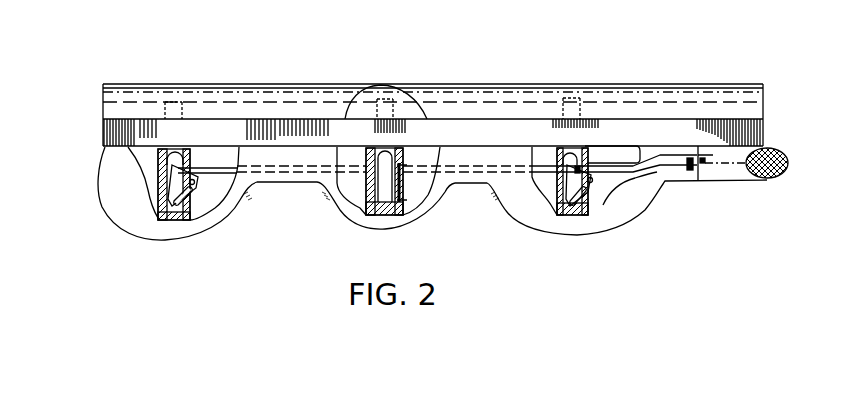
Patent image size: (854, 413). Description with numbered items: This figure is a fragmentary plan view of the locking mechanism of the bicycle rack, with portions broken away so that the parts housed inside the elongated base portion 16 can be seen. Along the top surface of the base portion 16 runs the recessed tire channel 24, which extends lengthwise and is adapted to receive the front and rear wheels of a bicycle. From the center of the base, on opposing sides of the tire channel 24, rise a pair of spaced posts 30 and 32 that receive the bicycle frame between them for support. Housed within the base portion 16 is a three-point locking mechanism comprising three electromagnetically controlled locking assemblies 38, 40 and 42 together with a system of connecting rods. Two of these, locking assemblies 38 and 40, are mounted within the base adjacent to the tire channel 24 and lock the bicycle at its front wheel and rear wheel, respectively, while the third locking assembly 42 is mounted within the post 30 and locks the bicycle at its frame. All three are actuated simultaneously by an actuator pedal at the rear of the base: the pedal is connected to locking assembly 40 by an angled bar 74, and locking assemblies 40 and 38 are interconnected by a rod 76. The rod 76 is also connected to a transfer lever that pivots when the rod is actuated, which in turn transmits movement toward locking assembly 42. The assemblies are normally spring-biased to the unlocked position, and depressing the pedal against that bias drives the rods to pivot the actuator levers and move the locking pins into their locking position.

The base portion 16 is at (242, 95).
The tire channel 24 is at (480, 133).
The post 32 is at (418, 100).
The angled bar 74 is at (642, 158).
The locking assembly 38 is at (192, 222).
The post 30 is at (342, 207).
The locking assembly 42 is at (400, 222).
The rod 76 is at (537, 183).
The locking assembly 40 is at (593, 220).